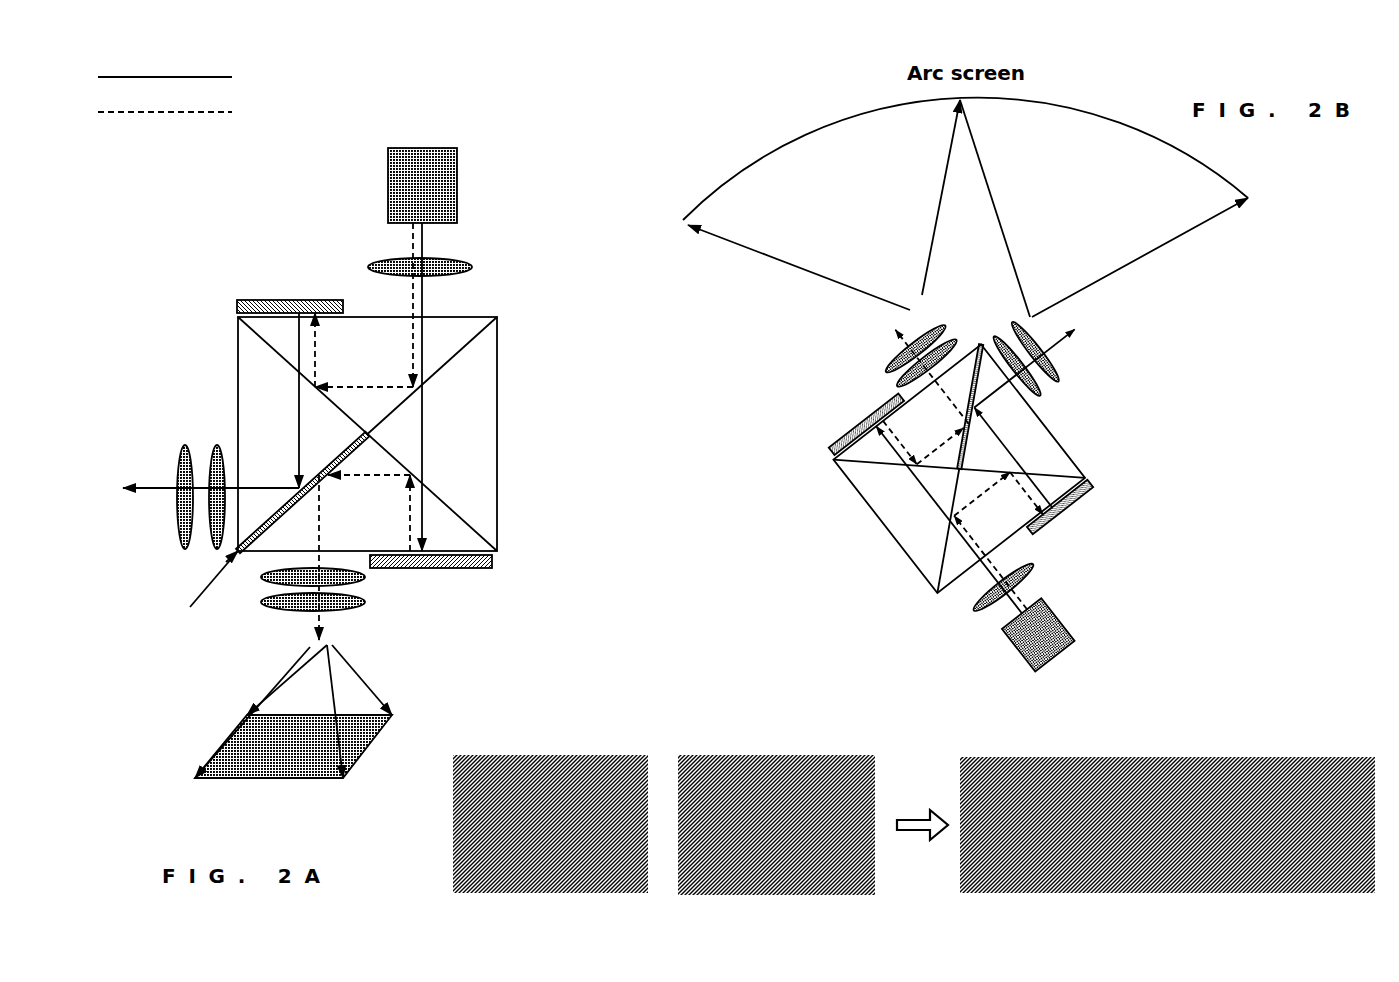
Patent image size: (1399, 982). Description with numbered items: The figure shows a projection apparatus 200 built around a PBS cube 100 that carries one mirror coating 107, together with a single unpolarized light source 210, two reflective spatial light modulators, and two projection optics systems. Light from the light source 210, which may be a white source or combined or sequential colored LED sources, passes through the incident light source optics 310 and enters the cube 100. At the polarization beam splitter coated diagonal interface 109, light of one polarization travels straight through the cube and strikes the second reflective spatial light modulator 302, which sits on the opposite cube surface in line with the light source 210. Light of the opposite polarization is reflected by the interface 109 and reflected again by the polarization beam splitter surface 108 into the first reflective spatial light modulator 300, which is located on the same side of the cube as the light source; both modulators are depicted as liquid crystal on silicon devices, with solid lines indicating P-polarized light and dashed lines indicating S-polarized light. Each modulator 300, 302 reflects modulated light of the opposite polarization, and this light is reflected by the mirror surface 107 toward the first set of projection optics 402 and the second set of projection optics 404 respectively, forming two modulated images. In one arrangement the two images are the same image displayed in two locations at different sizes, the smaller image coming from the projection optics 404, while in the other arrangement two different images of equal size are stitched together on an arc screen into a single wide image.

In FIG. 2A, the PBS cube 100 is at (533, 457).
In FIG. 2A, the mirror coating 107 is at (246, 549).
In FIG. 2A, the polarization beam splitter surface 108 is at (268, 347).
In FIG. 2A, the polarization beam splitter coated diagonal interface 109 is at (468, 347).
In FIG. 2A, the projection apparatus 200 is at (510, 118).
In FIG. 2A, the light source 210 is at (447, 213).
In FIG. 2B, the light source 210 is at (1062, 638).
In FIG. 2A, the first reflective spatial light modulator 300 is at (252, 303).
In FIG. 2B, the first reflective spatial light modulator 300 is at (848, 410).
In FIG. 2A, the second reflective spatial light modulator 302 is at (397, 568).
In FIG. 2B, the second reflective spatial light modulator 302 is at (1083, 490).
In FIG. 2A, the incident light source optics 310 is at (455, 268).
In FIG. 2A, the first set of projection optics 402 is at (167, 550).
In FIG. 2B, the first set of projection optics 402 is at (1080, 363).
In FIG. 2A, the second set of projection optics 404 is at (290, 627).
In FIG. 2B, the second set of projection optics 404 is at (877, 357).